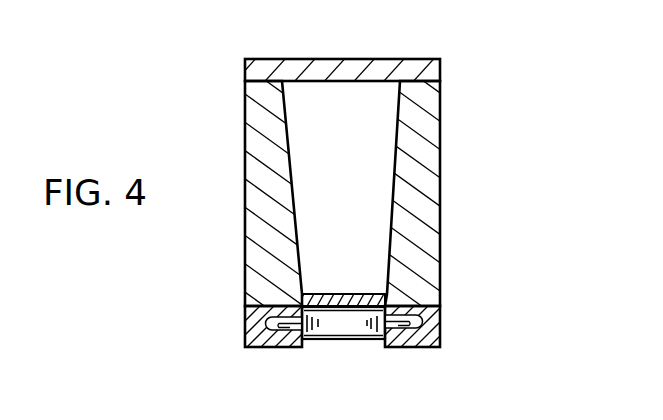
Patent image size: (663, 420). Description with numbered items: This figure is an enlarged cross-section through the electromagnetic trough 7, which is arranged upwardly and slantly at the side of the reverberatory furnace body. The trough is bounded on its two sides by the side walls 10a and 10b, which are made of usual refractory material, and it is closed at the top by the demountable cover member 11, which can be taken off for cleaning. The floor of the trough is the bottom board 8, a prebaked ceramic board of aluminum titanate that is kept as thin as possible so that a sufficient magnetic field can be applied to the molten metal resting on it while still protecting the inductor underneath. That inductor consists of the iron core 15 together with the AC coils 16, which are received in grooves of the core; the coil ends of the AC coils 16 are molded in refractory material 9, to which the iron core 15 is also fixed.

The cover member 11 is at (340, 68).
The side wall 10a is at (270, 180).
The side wall 10b is at (422, 183).
The bottom board 8 is at (322, 297).
The iron core 15 is at (348, 323).
The AC coils 16 is at (259, 347).
The refractory material 9 is at (421, 347).
The electromagnetic trough 7 is at (345, 343).